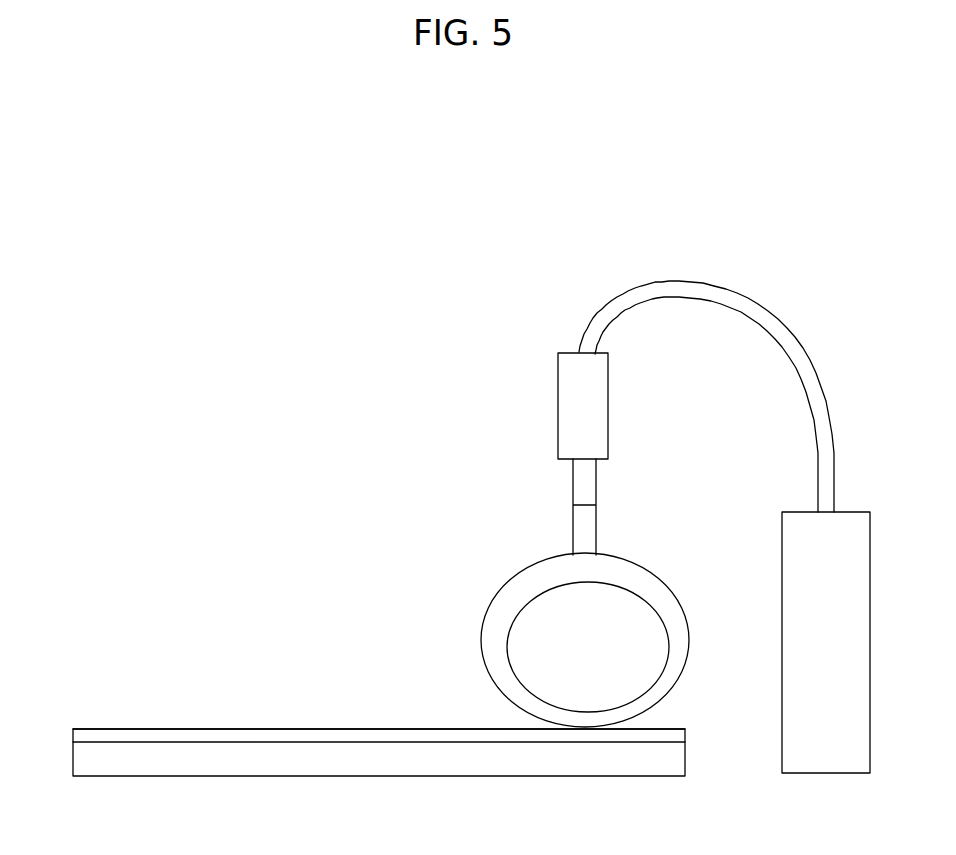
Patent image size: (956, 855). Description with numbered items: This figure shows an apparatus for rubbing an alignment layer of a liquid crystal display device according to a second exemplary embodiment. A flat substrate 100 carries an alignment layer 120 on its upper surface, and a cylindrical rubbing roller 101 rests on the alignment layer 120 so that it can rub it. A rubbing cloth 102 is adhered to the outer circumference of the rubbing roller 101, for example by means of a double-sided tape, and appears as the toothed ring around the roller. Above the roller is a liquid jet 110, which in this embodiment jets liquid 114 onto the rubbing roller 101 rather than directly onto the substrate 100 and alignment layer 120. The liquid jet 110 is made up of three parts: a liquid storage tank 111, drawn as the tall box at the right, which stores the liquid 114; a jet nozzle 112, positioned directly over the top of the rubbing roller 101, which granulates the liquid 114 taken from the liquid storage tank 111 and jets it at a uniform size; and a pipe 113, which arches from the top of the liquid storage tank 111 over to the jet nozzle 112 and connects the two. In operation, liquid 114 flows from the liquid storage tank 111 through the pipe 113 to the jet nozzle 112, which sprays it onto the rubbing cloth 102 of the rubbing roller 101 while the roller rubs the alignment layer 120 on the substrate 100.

The substrate 100 is at (680, 755).
The alignment layer 120 is at (680, 733).
The rubbing roller 101 is at (645, 645).
The rubbing cloth 102 is at (612, 572).
The liquid 114 is at (500, 595).
The liquid jet 110 is at (714, 514).
The liquid storage tank 111 is at (826, 760).
The jet nozzle 112 is at (586, 481).
The pipe 113 is at (667, 290).